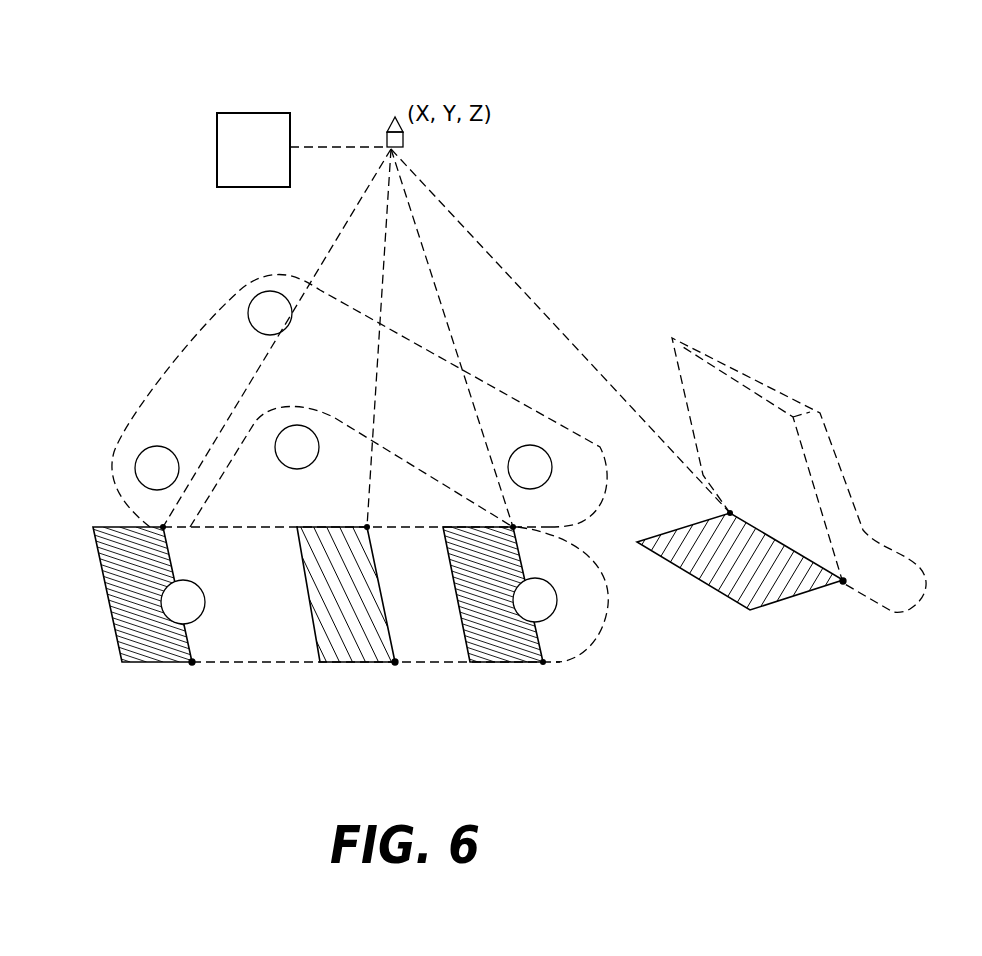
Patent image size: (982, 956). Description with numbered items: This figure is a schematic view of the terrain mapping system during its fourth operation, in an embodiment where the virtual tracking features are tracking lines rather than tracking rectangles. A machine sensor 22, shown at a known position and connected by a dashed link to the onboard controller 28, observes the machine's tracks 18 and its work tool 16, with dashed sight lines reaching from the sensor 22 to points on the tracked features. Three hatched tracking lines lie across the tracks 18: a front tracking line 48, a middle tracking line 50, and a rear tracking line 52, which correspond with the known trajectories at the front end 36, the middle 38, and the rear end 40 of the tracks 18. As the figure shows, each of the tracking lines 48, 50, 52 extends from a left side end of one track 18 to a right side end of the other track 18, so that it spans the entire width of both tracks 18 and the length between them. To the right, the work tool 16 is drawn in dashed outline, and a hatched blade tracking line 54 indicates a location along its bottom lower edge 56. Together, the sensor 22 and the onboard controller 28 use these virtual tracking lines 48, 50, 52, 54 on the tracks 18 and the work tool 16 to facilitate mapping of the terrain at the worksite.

The work tool 16 is at (811, 409).
The traction device 18 is at (613, 477).
The machine sensor 22 is at (394, 117).
The onboard controller 28 is at (240, 164).
The front end 36 is at (563, 662).
The middle 38 is at (395, 664).
The rear end 40 is at (192, 664).
The front tracking line 48 is at (528, 662).
The middle tracking line 50 is at (381, 605).
The rear tracking line 52 is at (175, 642).
The blade tracking line 54 is at (802, 575).
The bottom lower edge 56 is at (845, 584).